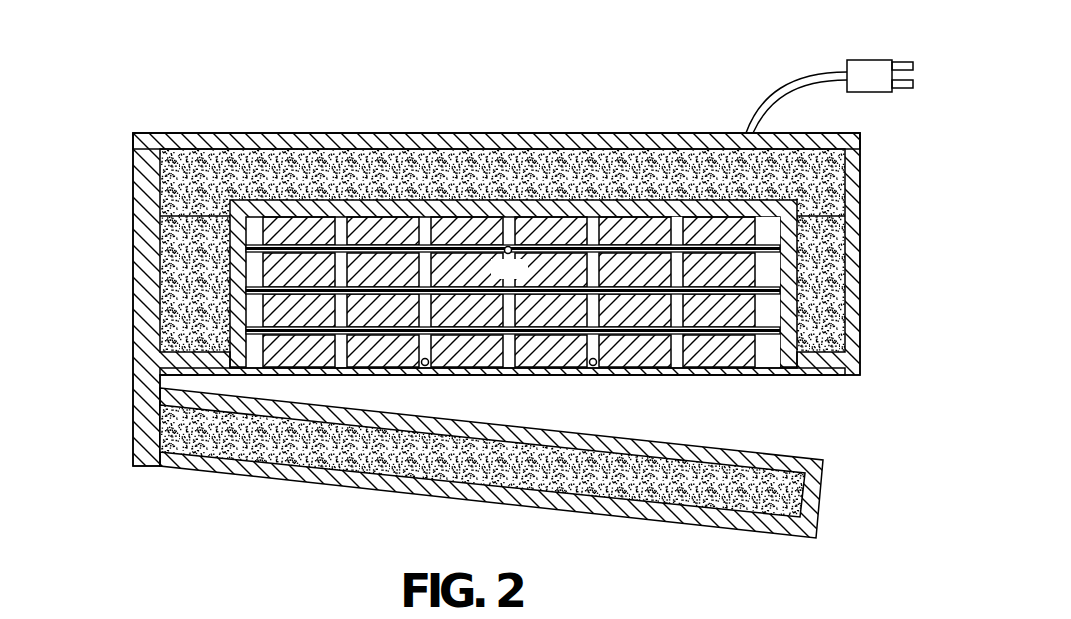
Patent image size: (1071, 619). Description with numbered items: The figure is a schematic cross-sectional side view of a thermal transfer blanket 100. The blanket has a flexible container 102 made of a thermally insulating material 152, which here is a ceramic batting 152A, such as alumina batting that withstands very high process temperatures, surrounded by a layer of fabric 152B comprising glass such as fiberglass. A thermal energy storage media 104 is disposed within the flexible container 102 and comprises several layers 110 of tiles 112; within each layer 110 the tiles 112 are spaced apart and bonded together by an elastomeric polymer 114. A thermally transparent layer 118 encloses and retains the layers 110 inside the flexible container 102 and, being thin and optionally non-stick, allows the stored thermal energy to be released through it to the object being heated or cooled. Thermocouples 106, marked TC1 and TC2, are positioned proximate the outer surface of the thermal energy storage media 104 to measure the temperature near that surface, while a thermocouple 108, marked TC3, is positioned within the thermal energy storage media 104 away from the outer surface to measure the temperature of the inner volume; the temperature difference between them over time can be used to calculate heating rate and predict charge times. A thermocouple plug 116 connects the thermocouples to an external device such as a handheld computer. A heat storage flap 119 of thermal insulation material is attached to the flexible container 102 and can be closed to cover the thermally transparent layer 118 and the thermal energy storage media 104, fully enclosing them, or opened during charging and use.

The thermal transfer blanket 100 is at (112, 30).
The flexible container 102 is at (132, 267).
The thermal energy storage media 104 is at (695, 367).
The thermocouples 106 is at (428, 363).
The thermocouples 108 is at (508, 246).
The layer 110 is at (773, 345).
The tiles 112 is at (747, 318).
The elastomeric polymer 114 is at (773, 218).
The thermocouple plug 116 is at (866, 60).
The thermally transparent layer 118 is at (398, 373).
The heat storage flap 119 is at (483, 508).
The thermally insulating material 152 is at (424, 127).
The ceramic batting 152A is at (833, 182).
The layer of fabric 152B is at (312, 133).
The thermocouple 1 TC1 is at (426, 396).
The thermocouple 2 TC2 is at (591, 396).
The thermocouple 3 TC3 is at (509, 270).